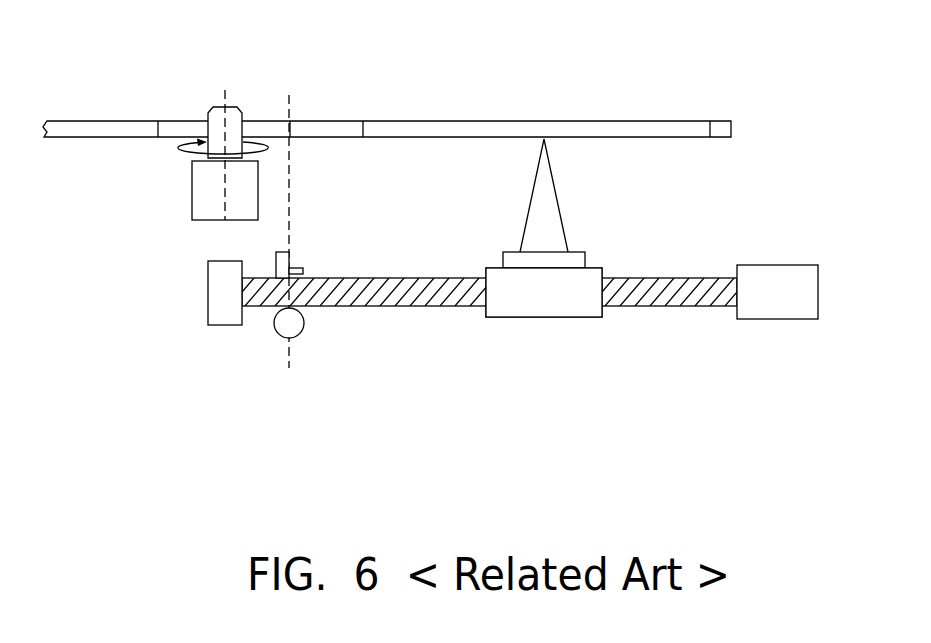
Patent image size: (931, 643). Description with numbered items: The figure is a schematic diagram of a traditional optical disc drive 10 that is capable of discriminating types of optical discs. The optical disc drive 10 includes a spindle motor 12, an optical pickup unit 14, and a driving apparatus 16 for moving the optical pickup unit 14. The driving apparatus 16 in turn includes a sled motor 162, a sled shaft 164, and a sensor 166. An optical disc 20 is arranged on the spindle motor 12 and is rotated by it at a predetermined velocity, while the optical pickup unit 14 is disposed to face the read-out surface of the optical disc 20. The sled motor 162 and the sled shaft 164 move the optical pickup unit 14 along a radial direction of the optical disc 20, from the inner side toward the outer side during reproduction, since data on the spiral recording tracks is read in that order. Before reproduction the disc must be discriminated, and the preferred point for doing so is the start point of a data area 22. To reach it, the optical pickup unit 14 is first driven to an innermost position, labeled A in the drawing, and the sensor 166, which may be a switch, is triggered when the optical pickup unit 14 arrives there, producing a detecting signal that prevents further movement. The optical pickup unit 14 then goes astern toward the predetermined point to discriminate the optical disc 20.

The optical disc drive 10 is at (712, 210).
The spindle motor 12 is at (208, 187).
The optical pickup unit 14 is at (503, 290).
The driving apparatus 16 is at (833, 400).
The sled motor 162 is at (780, 289).
The sled shaft 164 is at (680, 297).
The sensor 166 is at (280, 272).
The optical disc 20 is at (722, 115).
The data area 22 is at (512, 130).